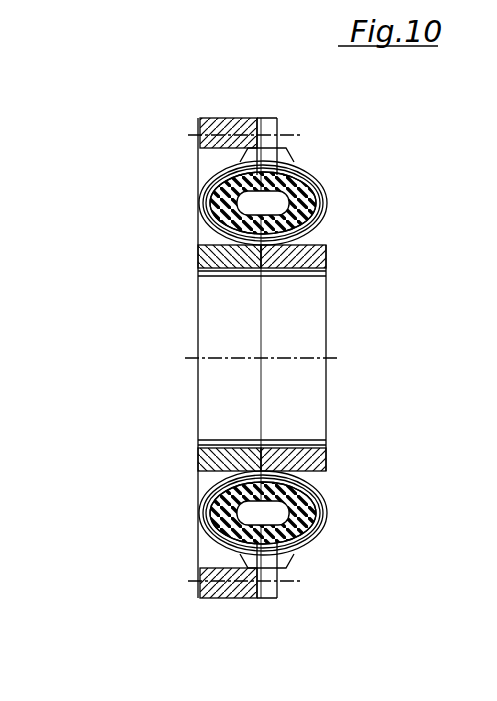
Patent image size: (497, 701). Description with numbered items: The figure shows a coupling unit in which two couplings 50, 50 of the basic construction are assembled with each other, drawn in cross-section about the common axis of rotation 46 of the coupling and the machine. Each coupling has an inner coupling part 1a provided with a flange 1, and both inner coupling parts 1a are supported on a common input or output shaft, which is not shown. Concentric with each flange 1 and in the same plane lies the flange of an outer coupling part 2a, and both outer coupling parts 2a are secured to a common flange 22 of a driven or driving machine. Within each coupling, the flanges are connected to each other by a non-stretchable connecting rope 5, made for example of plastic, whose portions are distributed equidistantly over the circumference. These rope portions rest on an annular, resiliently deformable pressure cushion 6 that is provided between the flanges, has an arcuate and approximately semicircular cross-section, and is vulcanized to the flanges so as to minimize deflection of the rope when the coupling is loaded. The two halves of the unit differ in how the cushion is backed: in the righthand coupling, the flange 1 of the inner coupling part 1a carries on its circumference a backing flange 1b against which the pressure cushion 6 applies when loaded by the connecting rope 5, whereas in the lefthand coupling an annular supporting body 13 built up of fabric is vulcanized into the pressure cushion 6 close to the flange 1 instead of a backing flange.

The flange 1 is at (447, 500).
The inner coupling part 1a is at (446, 448).
The backing flange 1b is at (321, 517).
The outer coupling part 2a is at (256, 598).
The connecting rope 5 is at (320, 563).
The pressure cushion 6 is at (444, 607).
The annular supporting body 13 is at (198, 504).
The common flange 22 is at (198, 594).
The axis of rotation 46 is at (335, 358).
The coupling 50 is at (196, 250).